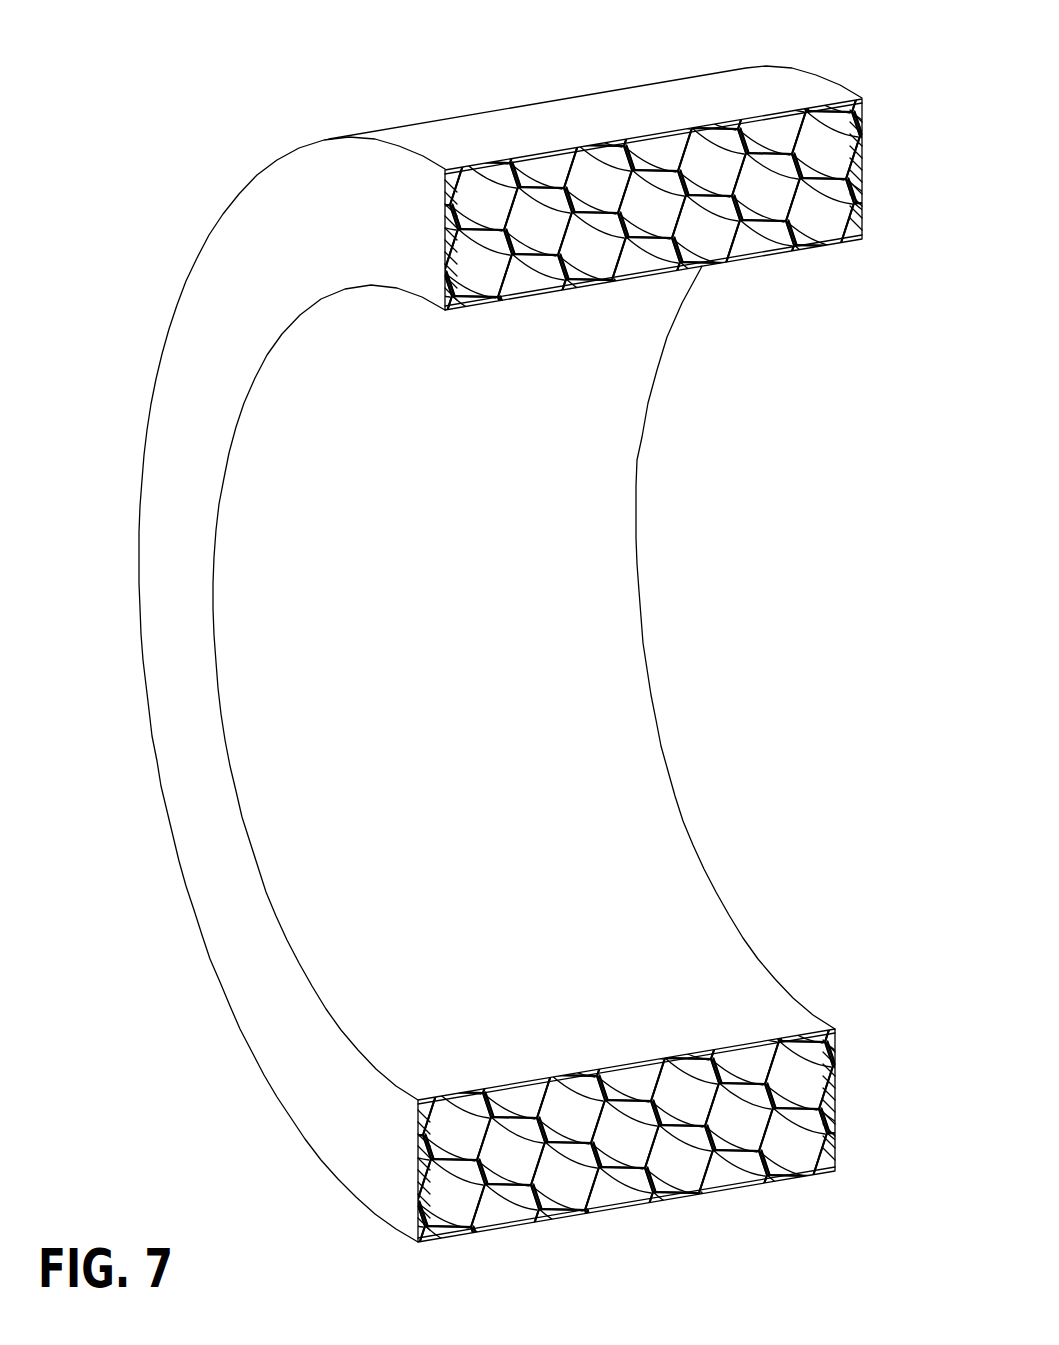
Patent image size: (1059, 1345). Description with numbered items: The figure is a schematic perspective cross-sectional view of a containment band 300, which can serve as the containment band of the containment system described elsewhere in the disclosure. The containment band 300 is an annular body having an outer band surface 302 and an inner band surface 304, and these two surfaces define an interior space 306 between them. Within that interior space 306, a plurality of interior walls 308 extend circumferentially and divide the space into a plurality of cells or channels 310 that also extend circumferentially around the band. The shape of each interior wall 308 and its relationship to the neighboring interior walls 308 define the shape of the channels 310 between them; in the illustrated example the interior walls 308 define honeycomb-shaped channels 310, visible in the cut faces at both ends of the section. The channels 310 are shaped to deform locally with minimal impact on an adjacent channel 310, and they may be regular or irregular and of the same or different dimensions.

The containment band 300 is at (193, 72).
The outer band surface 302 is at (748, 103).
The inner band surface 304 is at (568, 478).
The interior space 306 is at (700, 230).
The interior walls 308 is at (823, 170).
The channels 310 is at (712, 160).